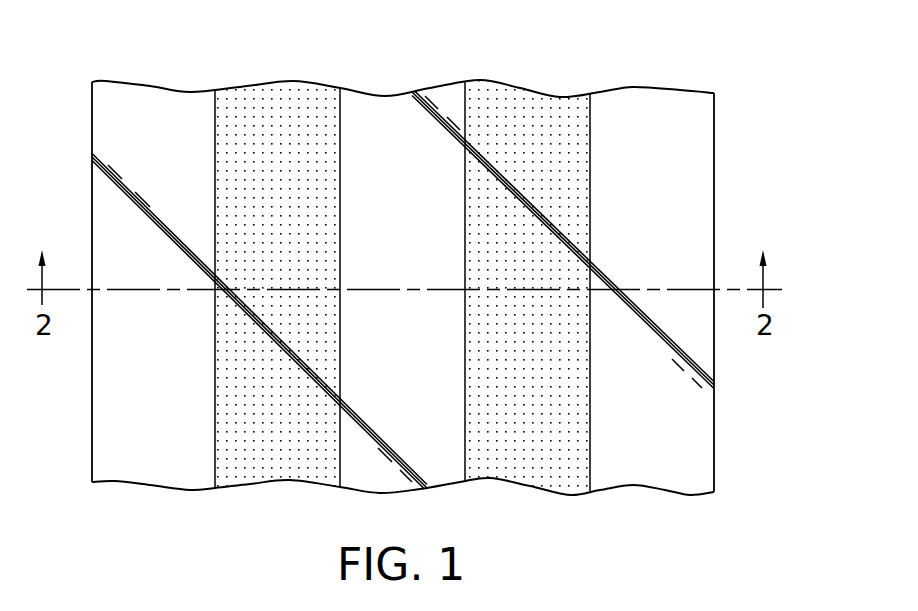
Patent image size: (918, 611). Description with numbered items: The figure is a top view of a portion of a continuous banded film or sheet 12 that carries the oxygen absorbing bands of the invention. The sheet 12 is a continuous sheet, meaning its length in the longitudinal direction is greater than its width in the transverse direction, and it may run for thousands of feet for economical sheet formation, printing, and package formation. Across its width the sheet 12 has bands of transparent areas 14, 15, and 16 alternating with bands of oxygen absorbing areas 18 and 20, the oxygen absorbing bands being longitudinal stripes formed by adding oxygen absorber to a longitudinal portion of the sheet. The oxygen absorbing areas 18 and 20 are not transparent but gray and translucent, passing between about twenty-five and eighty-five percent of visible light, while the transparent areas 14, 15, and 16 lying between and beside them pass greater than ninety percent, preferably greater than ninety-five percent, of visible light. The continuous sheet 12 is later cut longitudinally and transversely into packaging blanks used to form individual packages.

The continuous banded film or sheet 12 is at (747, 121).
The band of transparent area 14 is at (387, 117).
The band of transparent area 15 is at (143, 115).
The band of transparent area 16 is at (653, 117).
The band of oxygen absorbing area 18 is at (270, 467).
The band of oxygen absorbing area 20 is at (542, 475).